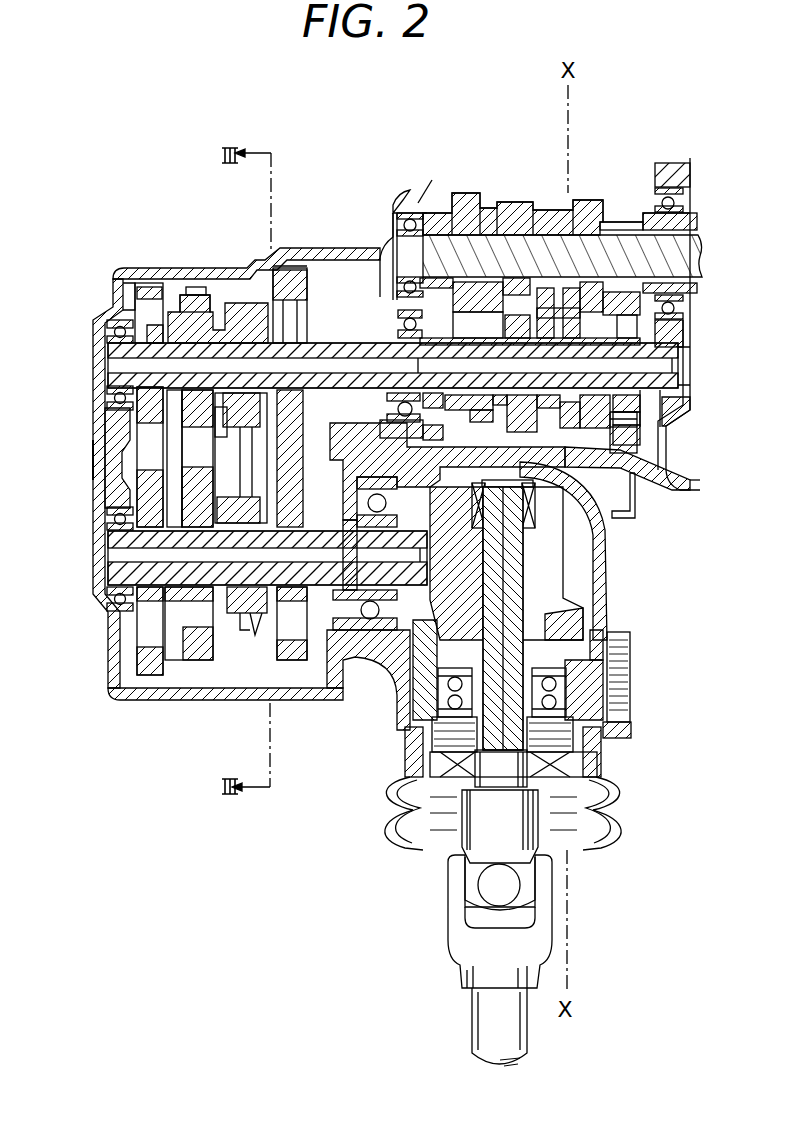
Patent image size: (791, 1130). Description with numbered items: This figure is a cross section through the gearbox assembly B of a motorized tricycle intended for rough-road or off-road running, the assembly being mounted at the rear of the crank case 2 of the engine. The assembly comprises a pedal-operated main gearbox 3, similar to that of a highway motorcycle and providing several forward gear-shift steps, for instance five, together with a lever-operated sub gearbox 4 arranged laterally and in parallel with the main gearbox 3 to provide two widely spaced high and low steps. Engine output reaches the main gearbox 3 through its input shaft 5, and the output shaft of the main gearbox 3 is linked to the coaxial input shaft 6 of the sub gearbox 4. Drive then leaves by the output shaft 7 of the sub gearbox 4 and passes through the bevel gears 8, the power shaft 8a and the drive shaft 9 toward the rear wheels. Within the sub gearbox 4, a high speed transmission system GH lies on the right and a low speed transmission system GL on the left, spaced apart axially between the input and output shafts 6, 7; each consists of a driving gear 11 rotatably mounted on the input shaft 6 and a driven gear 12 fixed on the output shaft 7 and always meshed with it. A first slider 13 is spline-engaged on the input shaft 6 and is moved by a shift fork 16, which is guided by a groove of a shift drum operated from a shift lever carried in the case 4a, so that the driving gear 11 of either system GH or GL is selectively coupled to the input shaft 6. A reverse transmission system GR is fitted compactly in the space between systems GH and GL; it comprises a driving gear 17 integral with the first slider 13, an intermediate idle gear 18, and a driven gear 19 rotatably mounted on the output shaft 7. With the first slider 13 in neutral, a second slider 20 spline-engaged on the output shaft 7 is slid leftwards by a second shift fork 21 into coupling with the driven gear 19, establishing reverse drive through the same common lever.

The crank case 2 is at (410, 195).
The main gearbox 3 is at (578, 190).
The sub gearbox 4 is at (87, 368).
The case 4a is at (90, 449).
The input shaft 5 is at (705, 260).
The input shaft 6 is at (338, 348).
The output shaft 7 is at (110, 568).
The bevel gears 8 is at (583, 622).
The power shaft 8a is at (543, 788).
The drive shaft 9 is at (482, 1028).
The driving gear 11 is at (145, 297).
The driven gear 12 is at (147, 677).
The first slider 13 is at (247, 307).
The shift fork 16 is at (220, 420).
The driving gear 17 is at (198, 290).
The intermediate idle gear 18 is at (222, 452).
The driven gear 19 is at (197, 660).
The second slider 20 is at (243, 617).
The second shift fork 21 is at (254, 630).
The gearbox assembly B is at (529, 186).
The low speed transmission system GL is at (145, 277).
The reverse transmission system GR is at (189, 282).
The high speed transmission system GH is at (298, 256).